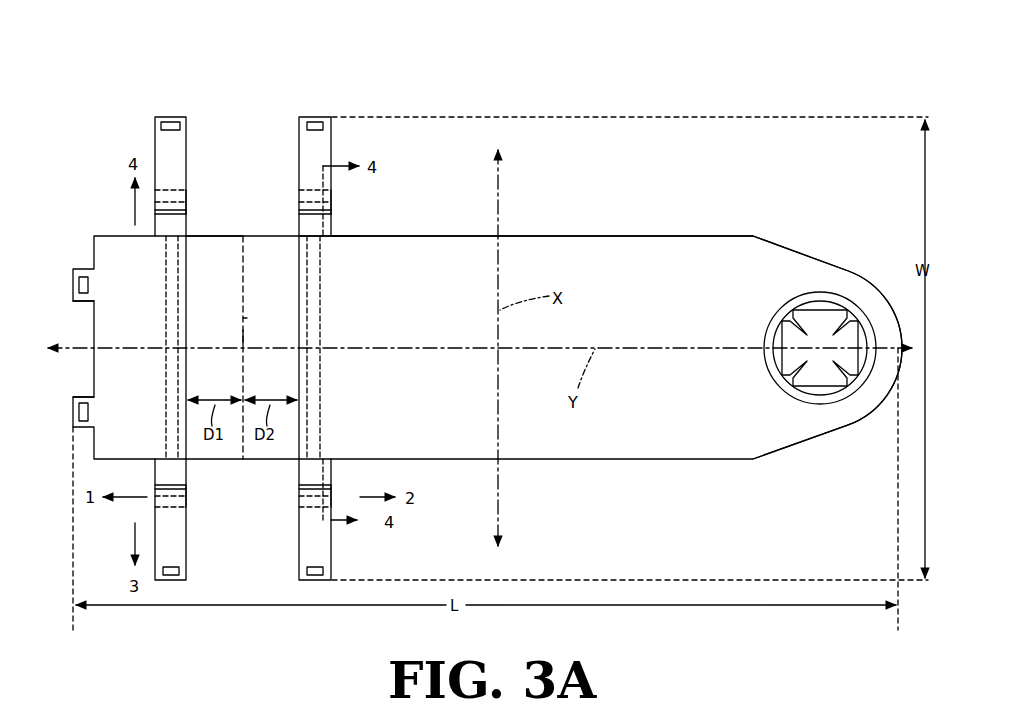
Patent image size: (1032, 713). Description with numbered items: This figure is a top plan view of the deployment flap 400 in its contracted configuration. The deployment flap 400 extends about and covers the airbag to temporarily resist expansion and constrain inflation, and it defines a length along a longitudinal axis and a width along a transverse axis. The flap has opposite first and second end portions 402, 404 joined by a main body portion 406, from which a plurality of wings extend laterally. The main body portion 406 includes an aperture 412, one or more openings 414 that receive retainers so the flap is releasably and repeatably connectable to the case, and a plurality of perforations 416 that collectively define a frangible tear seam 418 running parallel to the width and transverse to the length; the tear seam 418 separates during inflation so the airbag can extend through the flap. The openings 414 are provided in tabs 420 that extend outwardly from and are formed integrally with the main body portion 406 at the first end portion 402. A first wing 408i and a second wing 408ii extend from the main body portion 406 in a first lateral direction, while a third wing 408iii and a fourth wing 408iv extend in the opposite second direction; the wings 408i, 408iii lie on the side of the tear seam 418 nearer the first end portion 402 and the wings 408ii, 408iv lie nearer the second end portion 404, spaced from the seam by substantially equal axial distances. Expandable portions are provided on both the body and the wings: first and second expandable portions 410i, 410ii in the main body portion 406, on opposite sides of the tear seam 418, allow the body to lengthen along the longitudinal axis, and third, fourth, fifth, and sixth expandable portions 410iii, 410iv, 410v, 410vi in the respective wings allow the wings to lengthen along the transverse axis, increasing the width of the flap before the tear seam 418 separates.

The deployment flap 400 is at (654, 146).
The first end portion 402 is at (82, 232).
The second end portion 404 is at (862, 434).
The main body portion 406 is at (676, 232).
The first wing 408i is at (197, 570).
The second wing 408ii is at (348, 540).
The third wing 408iii is at (201, 122).
The fourth wing 408iv is at (344, 136).
The first expandable portion 410i is at (203, 270).
The second expandable portion 410ii is at (354, 259).
The third expandable portion 410iii is at (197, 500).
The fourth expandable portion 410iv is at (342, 505).
The fifth expandable portion 410v is at (193, 198).
The sixth expandable portion 410vi is at (340, 196).
The aperture 412 is at (827, 292).
The openings 414 is at (170, 122).
The perforations 416 is at (245, 318).
The tear seam 418 is at (252, 336).
The tabs 420 is at (81, 308).